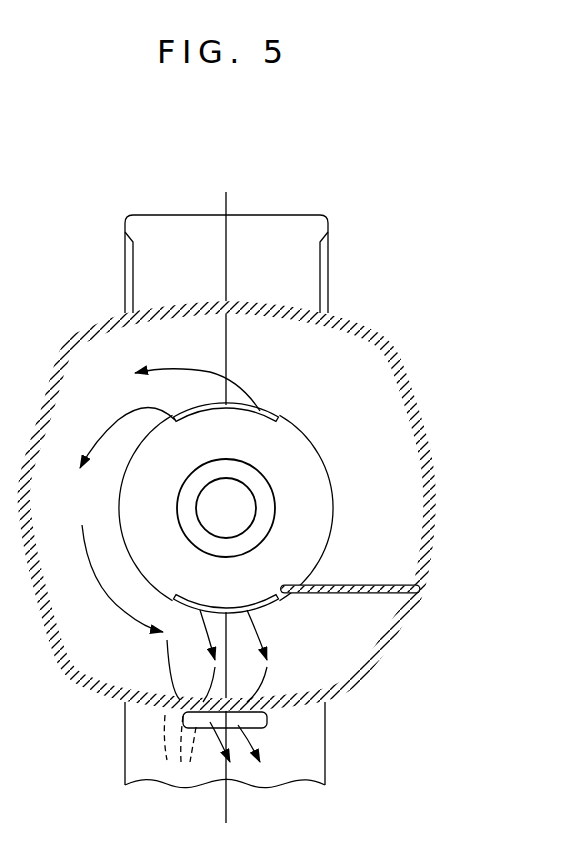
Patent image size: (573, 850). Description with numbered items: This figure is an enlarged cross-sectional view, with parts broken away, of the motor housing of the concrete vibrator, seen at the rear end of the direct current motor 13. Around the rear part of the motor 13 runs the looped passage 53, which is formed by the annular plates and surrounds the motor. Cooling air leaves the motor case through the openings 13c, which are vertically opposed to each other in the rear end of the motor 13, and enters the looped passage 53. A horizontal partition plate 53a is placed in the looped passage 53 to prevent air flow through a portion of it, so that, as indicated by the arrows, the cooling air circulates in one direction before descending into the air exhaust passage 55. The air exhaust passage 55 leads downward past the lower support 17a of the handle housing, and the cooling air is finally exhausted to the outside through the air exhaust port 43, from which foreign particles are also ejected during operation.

The direct current motor 13 is at (315, 503).
The openings 13c is at (272, 413).
The looped passage 53 is at (375, 392).
The horizontal partition plate 53a is at (367, 583).
The lower support 17a is at (143, 752).
The air exhaust passage 55 is at (197, 770).
The air exhaust port 43 is at (268, 718).